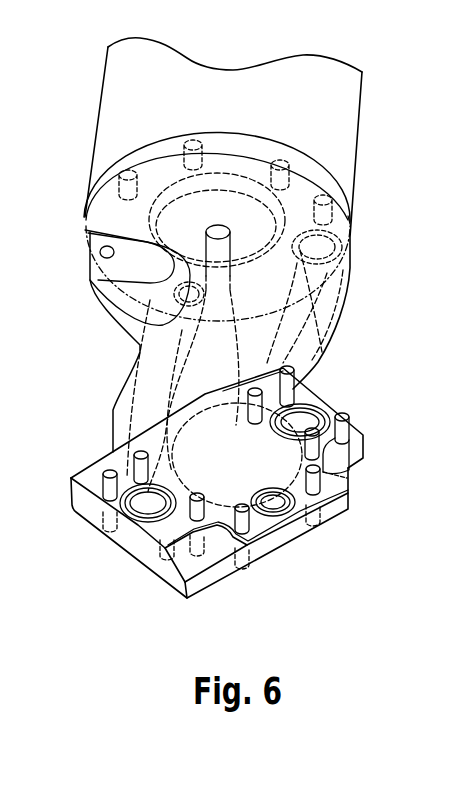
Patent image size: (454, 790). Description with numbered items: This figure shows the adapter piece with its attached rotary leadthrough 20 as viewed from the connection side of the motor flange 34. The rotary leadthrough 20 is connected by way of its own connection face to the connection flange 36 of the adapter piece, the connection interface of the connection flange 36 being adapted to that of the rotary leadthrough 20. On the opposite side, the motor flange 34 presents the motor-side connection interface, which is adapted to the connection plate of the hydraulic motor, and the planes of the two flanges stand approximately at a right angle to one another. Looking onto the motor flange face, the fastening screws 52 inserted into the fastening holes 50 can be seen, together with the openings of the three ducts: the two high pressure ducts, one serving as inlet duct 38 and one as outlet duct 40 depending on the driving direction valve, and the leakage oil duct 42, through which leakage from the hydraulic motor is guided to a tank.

The rotary leadthrough 20 is at (364, 142).
The connection flange 36 is at (348, 216).
The fastening holes 50 is at (345, 503).
The motor flange 34 is at (358, 437).
The fastening screws 52 is at (318, 492).
The outlet duct 40 is at (310, 400).
The inlet duct 38 is at (160, 512).
The leakage oil duct 42 is at (280, 505).